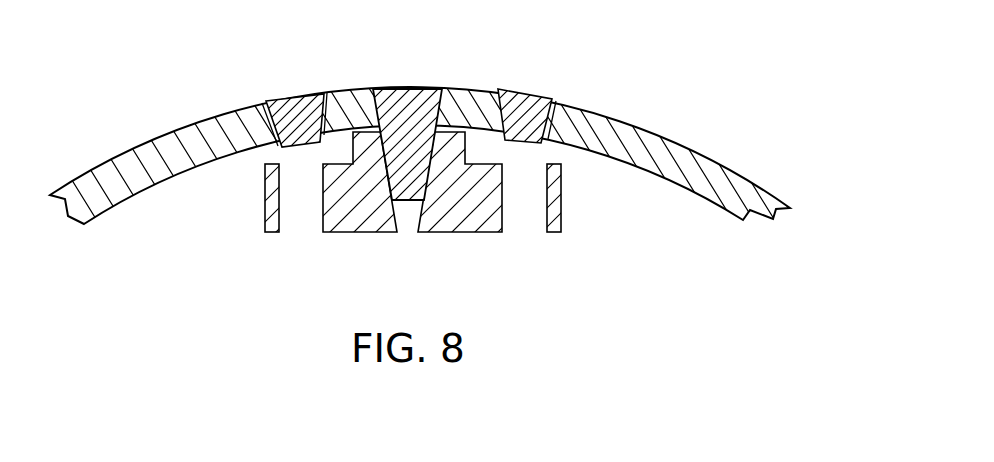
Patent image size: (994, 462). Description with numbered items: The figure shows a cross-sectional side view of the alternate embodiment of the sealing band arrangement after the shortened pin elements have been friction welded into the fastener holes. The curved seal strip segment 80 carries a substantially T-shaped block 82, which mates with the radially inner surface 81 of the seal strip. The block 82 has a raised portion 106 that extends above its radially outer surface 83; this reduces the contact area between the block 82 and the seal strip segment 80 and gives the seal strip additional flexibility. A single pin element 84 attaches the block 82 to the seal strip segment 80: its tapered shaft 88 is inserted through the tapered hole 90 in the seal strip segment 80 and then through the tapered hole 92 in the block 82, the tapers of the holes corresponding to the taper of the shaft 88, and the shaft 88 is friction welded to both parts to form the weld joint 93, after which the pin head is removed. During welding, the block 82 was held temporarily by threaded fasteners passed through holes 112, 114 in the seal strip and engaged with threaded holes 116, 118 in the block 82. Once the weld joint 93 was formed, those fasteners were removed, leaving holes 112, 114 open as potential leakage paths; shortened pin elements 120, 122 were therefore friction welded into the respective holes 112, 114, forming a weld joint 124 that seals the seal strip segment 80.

The seal strip segment 80 is at (744, 176).
The radially inner surface 81 is at (708, 198).
The block 82 is at (563, 201).
The radially outer surface 83 is at (280, 147).
The pin element 84 is at (403, 105).
The tapered shaft 88 is at (422, 166).
The tapered hole 90 is at (370, 108).
The tapered hole 92 is at (408, 237).
The weld joint 93 is at (378, 187).
The raised portion 106 is at (448, 150).
The hole 112 is at (268, 123).
The hole 114 is at (584, 117).
The threaded hole 116 is at (294, 235).
The threaded hole 118 is at (523, 238).
The shortened pin element 120 is at (290, 95).
The shortened pin element 122 is at (525, 94).
The weld joint 124 is at (258, 109).